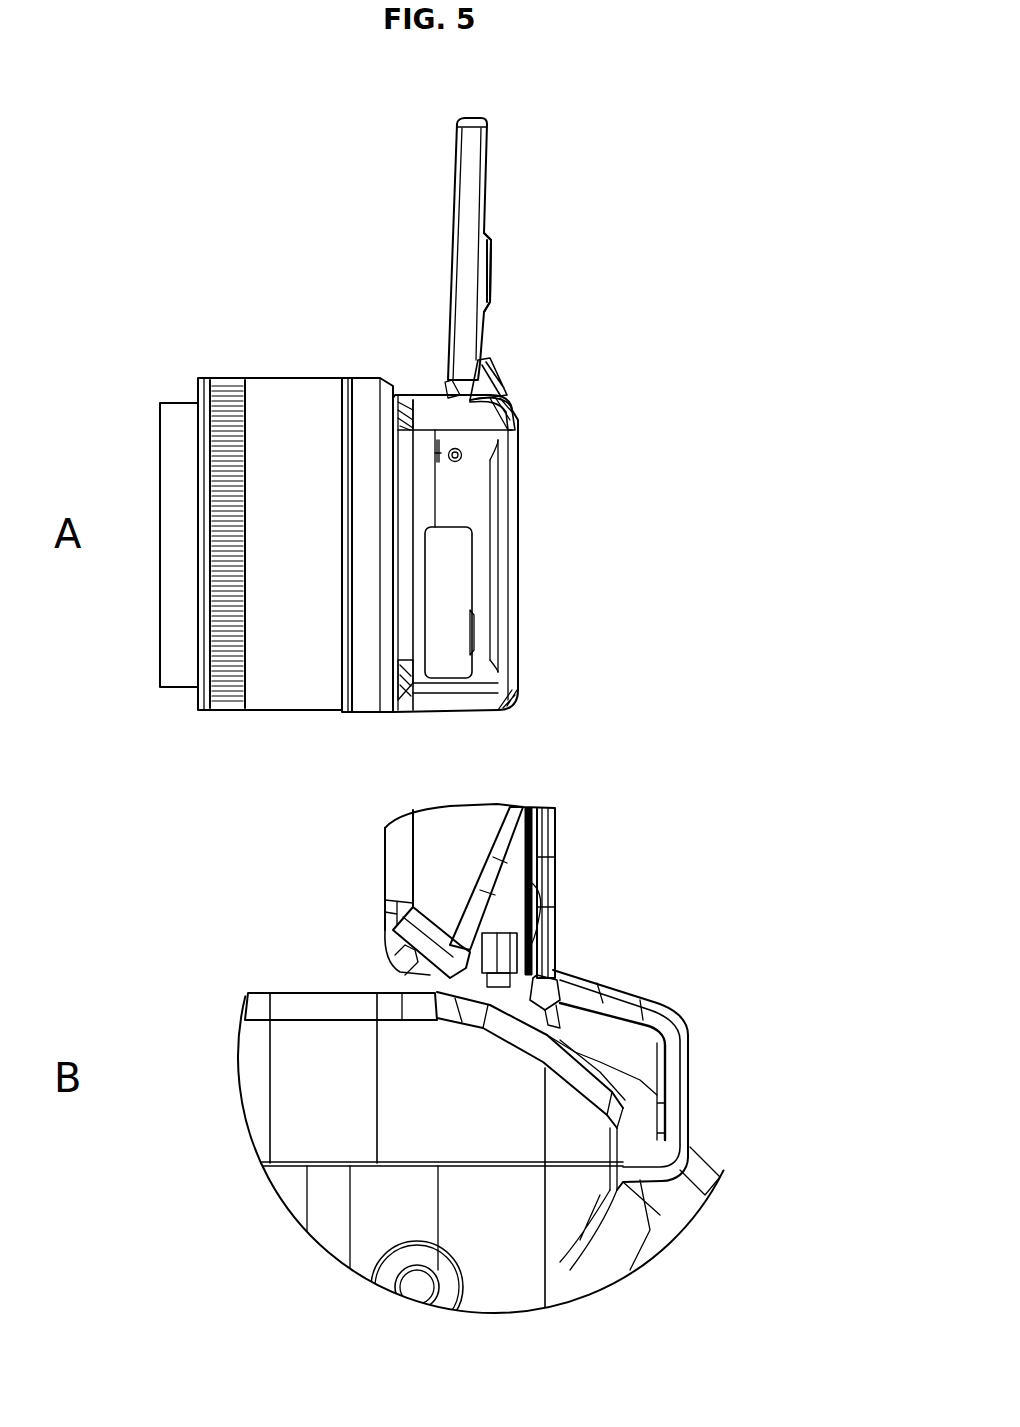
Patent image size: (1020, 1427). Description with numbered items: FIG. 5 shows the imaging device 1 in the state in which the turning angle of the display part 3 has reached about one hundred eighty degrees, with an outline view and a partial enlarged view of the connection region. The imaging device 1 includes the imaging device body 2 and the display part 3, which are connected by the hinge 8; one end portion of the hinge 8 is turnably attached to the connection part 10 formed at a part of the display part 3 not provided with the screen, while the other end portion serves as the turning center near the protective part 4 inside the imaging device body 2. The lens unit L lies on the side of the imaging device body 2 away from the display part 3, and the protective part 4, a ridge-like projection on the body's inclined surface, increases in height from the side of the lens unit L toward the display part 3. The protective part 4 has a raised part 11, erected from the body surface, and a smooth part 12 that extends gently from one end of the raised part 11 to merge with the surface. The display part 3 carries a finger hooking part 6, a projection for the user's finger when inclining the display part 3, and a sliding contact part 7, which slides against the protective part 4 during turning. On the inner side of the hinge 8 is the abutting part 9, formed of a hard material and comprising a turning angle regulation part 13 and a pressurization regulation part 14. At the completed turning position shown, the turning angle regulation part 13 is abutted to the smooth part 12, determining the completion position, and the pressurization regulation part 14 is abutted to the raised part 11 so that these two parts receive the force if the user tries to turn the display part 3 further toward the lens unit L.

The imaging device 1 is at (656, 290).
The lens unit L is at (285, 392).
The imaging device body 2 is at (508, 650).
The display part 3 is at (473, 198).
The protective part 4 is at (533, 853).
The finger hooking part 6 is at (452, 387).
The sliding contact part 7 is at (480, 968).
The hinge 8 is at (484, 371).
The abutting part 9 is at (510, 407).
The connection part 10 is at (490, 275).
The raised part 11 is at (535, 1026).
The smooth part 12 is at (443, 1003).
The turning angle regulation part 13 is at (550, 967).
The pressurization regulation part 14 is at (560, 1027).